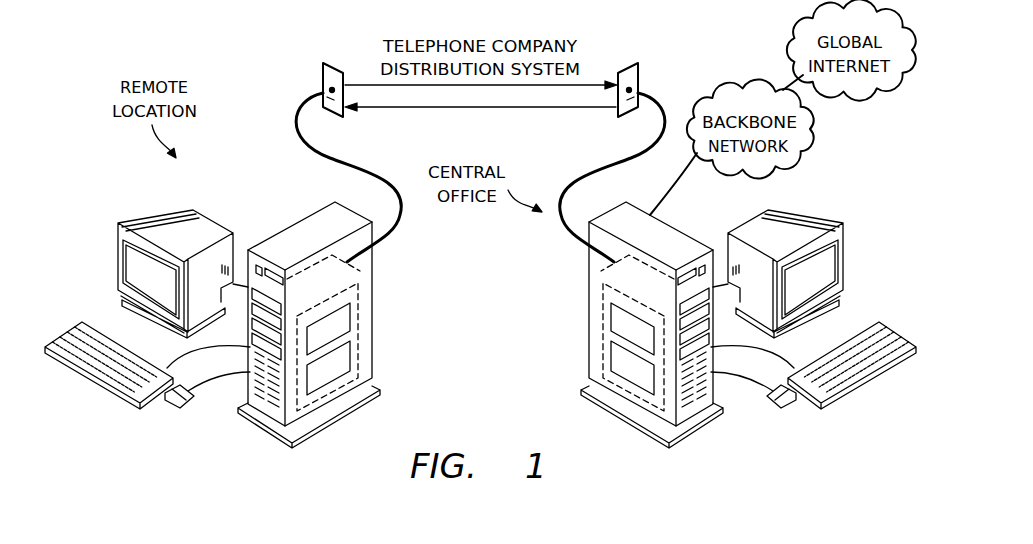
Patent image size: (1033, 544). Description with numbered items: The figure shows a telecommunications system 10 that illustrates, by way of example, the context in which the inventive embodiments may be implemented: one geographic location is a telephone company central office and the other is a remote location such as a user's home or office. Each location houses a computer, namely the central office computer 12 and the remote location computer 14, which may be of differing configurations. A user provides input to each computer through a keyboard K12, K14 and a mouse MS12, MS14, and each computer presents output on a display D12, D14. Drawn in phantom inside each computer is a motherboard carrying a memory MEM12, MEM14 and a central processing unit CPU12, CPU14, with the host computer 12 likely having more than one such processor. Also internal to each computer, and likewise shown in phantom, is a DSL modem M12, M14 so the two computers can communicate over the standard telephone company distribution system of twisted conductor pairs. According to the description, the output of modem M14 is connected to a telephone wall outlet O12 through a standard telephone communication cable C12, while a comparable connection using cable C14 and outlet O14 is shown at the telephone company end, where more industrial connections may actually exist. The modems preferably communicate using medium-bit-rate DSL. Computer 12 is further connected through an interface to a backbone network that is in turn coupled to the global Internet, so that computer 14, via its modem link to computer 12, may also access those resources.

The system 10 is at (250, 53).
The computer 12 is at (623, 425).
The computer 14 is at (335, 425).
The telephone wall outlet O12 is at (628, 62).
The telephone wall outlet O14 is at (333, 62).
The telephone communication cable C12 is at (607, 163).
The telephone communication cable C14 is at (302, 125).
The modem M12 is at (598, 263).
The modem M14 is at (363, 265).
The memory MEM12 is at (613, 317).
The memory MEM14 is at (345, 319).
The central processing unit CPU12 is at (613, 360).
The central processing unit CPU14 is at (345, 360).
The display D12 is at (845, 252).
The display D14 is at (177, 212).
The keyboard K12 is at (863, 383).
The keyboard K14 is at (97, 383).
The mouse MS12 is at (785, 412).
The mouse MS14 is at (173, 411).